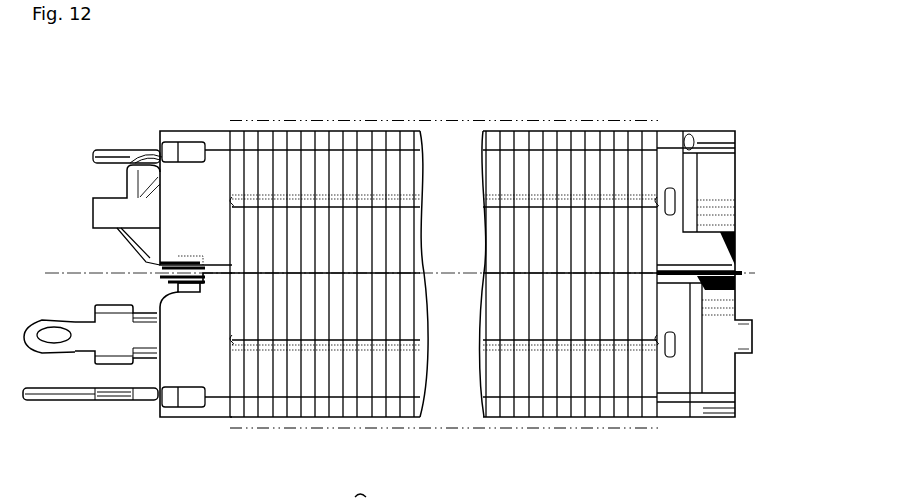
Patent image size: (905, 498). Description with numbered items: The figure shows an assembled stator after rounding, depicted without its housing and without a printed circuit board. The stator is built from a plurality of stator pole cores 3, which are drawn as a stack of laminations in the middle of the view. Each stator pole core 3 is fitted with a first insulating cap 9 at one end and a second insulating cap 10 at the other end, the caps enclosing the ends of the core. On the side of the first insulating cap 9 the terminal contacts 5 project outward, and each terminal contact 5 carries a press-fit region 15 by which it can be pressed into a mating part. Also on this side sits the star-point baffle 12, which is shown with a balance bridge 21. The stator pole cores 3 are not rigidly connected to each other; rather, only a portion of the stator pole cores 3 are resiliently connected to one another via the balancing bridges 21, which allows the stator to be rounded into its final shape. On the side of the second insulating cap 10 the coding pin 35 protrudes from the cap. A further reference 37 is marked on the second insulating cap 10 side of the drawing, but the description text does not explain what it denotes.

The stator pole core 3 is at (308, 188).
The terminal contact 5 is at (80, 305).
The first insulating cap 9 is at (195, 214).
The second insulating cap 10 is at (667, 167).
The star-point baffle 12 is at (90, 204).
The press-fit region 15 is at (50, 322).
The balance bridge 21 is at (133, 157).
The coding pin 35 is at (752, 345).
The insert element 37 is at (695, 346).